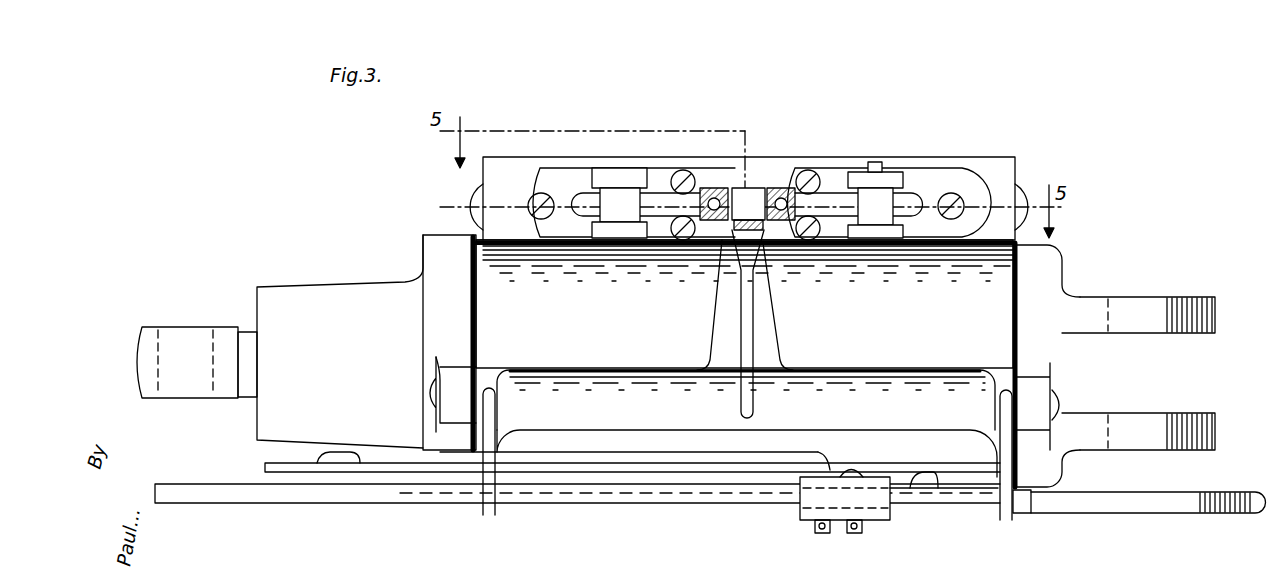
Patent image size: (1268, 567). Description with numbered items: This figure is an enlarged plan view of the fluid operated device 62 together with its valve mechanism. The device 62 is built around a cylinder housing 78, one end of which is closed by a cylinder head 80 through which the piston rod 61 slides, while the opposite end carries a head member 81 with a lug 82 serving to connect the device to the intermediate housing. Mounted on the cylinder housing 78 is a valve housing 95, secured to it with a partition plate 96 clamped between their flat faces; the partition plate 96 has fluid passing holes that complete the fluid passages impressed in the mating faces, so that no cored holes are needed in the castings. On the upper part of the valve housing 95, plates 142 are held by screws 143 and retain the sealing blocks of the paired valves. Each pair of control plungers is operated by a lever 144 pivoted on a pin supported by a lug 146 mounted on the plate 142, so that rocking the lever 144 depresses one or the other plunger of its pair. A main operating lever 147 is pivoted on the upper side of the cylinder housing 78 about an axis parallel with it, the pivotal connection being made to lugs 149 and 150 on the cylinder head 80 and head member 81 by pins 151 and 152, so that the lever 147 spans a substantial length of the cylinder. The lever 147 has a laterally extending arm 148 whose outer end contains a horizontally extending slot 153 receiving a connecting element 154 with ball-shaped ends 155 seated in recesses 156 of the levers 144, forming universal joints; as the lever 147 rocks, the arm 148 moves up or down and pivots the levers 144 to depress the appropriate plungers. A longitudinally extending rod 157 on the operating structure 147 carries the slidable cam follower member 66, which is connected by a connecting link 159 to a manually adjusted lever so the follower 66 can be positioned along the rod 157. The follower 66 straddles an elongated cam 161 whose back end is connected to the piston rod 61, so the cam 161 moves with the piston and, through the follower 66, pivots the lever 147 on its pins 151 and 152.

The piston rod 61 is at (246, 332).
The fluid operated device 62 is at (288, 270).
The cam follower member 66 is at (882, 518).
The cylinder housing 78 is at (503, 247).
The cylinder head 80 is at (345, 290).
The head member 81 is at (1066, 272).
The lug 82 is at (1175, 413).
The valve housing 95 is at (1015, 152).
The partition plate 96 is at (520, 246).
The plate 142 is at (563, 173).
The screw 143 is at (540, 193).
The lever 144 is at (665, 197).
The lug 146 is at (620, 178).
The main operating lever 147 is at (858, 356).
The arm 148 is at (765, 317).
The lug 149 is at (440, 373).
The lug 150 is at (1042, 388).
The pin 151 is at (430, 398).
The pin 152 is at (1055, 403).
The slot 153 is at (750, 188).
The connecting element 154 is at (775, 190).
The ball-shaped end 155 is at (722, 228).
The recess 156 is at (780, 195).
The rod 157 is at (620, 505).
The connecting link 159 is at (632, 458).
The cam 161 is at (1145, 513).